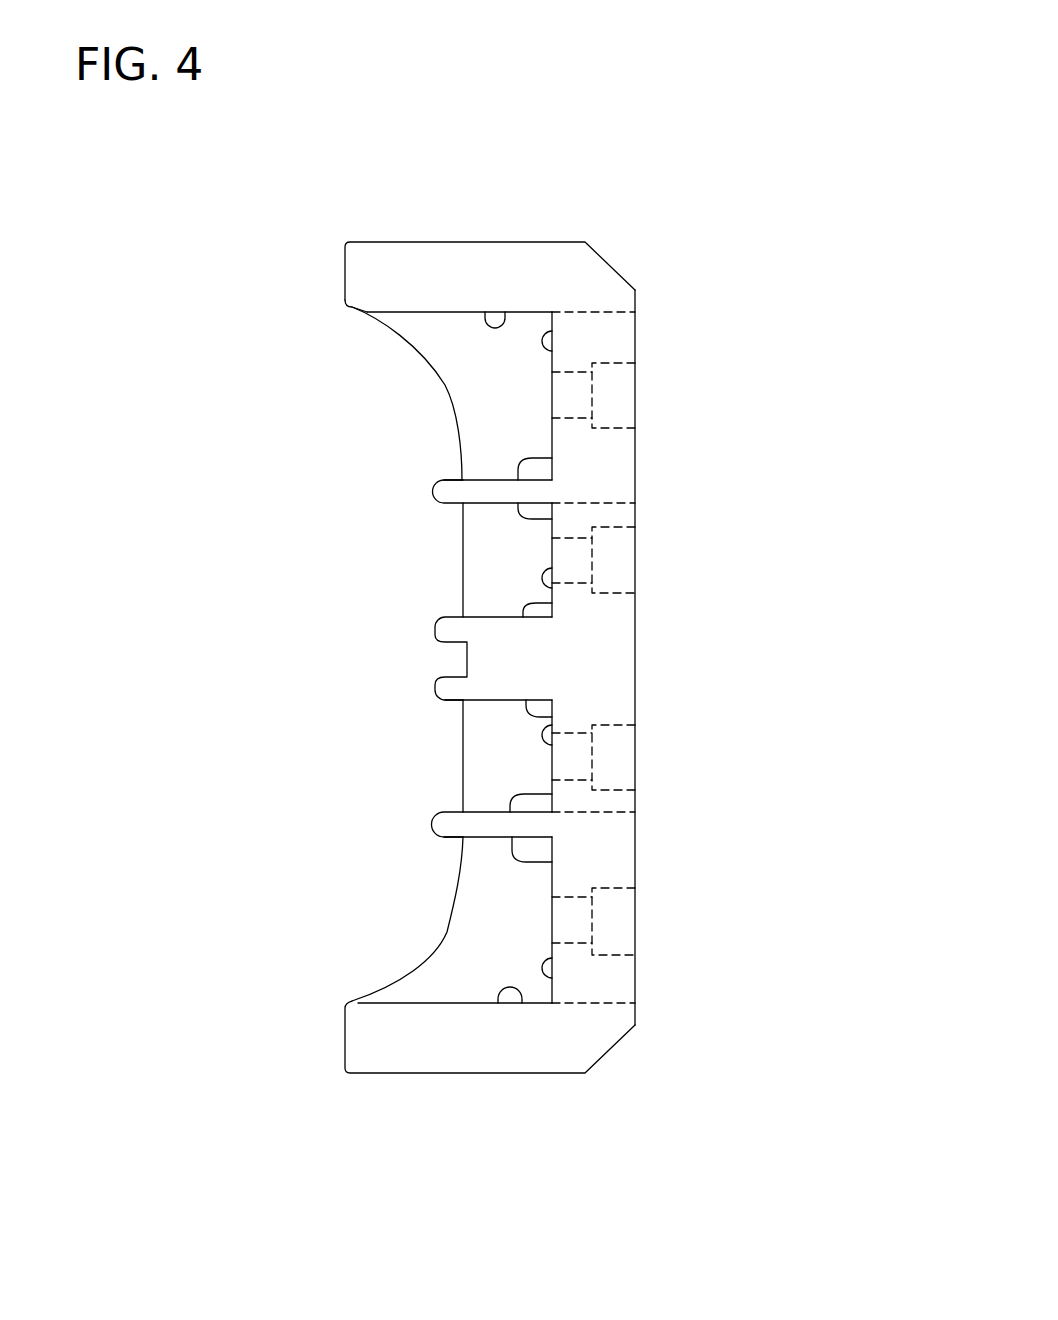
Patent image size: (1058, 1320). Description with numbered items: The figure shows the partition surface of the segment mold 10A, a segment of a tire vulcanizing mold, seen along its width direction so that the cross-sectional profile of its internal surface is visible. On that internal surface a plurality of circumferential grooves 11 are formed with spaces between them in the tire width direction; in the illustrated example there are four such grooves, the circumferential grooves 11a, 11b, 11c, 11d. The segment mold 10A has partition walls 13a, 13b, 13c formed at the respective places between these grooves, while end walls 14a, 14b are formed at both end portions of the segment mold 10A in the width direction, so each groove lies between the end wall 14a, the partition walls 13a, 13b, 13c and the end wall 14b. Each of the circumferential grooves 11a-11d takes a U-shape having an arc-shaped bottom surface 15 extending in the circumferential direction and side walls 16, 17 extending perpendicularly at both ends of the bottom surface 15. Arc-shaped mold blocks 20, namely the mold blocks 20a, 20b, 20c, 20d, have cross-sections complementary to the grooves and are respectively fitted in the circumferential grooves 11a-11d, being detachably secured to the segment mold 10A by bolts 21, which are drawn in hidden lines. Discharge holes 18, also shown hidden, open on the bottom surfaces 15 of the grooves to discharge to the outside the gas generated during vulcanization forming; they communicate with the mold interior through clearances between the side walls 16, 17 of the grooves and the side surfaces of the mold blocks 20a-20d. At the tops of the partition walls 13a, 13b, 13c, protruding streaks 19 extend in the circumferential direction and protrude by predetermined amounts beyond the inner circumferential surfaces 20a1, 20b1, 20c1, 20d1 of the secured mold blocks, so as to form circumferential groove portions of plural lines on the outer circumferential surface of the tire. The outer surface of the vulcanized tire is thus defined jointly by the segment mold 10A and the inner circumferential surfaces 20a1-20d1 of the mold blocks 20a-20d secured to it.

The segment mold 10A is at (498, 217).
The circumferential grooves 11 is at (432, 314).
The circumferential groove 11a is at (550, 432).
The circumferential groove 11b is at (550, 540).
The circumferential groove 11c is at (550, 767).
The circumferential groove 11d is at (550, 920).
The partition wall 13a is at (483, 467).
The partition wall 13b is at (520, 717).
The partition wall 13c is at (482, 830).
The end wall 14a is at (383, 253).
The end wall 14b is at (383, 1065).
The bottom surface 15 is at (555, 342).
The side wall 16 is at (505, 312).
The side wall 17 is at (545, 466).
The discharge holes 18 is at (597, 308).
The protruding streaks 19 is at (440, 495).
The mold blocks 20 is at (393, 985).
The mold block 20a is at (462, 340).
The inner circumferential surface 20a1 is at (442, 370).
The mold block 20b is at (475, 550).
The inner circumferential surface 20b1 is at (463, 593).
The mold block 20c is at (478, 797).
The inner circumferential surface 20c1 is at (463, 748).
The mold block 20d is at (478, 995).
The inner circumferential surface 20d1 is at (420, 967).
The bolts 21 is at (600, 396).